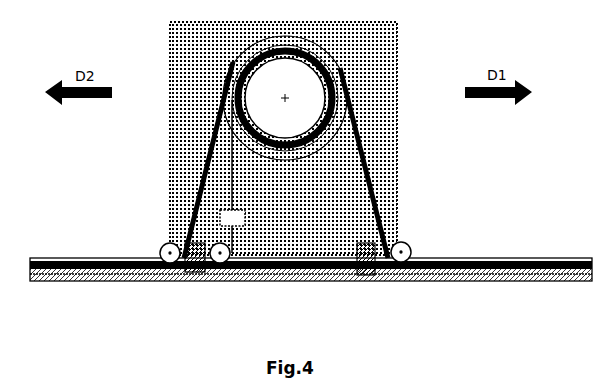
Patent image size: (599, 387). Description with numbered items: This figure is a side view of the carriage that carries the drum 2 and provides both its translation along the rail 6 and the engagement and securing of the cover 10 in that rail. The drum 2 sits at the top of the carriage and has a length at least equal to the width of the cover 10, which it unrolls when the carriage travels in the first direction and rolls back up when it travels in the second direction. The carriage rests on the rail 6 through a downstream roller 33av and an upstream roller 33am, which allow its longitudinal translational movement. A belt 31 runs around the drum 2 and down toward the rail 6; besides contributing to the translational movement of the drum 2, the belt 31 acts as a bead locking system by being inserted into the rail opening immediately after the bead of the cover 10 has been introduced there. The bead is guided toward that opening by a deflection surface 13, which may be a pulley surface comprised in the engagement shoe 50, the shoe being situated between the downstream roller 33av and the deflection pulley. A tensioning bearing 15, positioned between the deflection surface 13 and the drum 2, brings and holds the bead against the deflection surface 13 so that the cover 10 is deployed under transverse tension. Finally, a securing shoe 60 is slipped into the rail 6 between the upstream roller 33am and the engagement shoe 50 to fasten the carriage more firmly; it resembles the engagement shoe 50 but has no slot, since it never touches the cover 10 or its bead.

The drum 2 is at (348, 64).
The cover 10 is at (176, 124).
The tensioning bearing 15 is at (220, 216).
The belt 31 is at (397, 168).
The downstream roller 33av is at (163, 247).
The upstream roller 33am is at (410, 243).
The engagement shoe 50 is at (207, 280).
The deflection surface 13 is at (243, 280).
The rail 6 is at (297, 282).
The securing shoe 60 is at (382, 282).